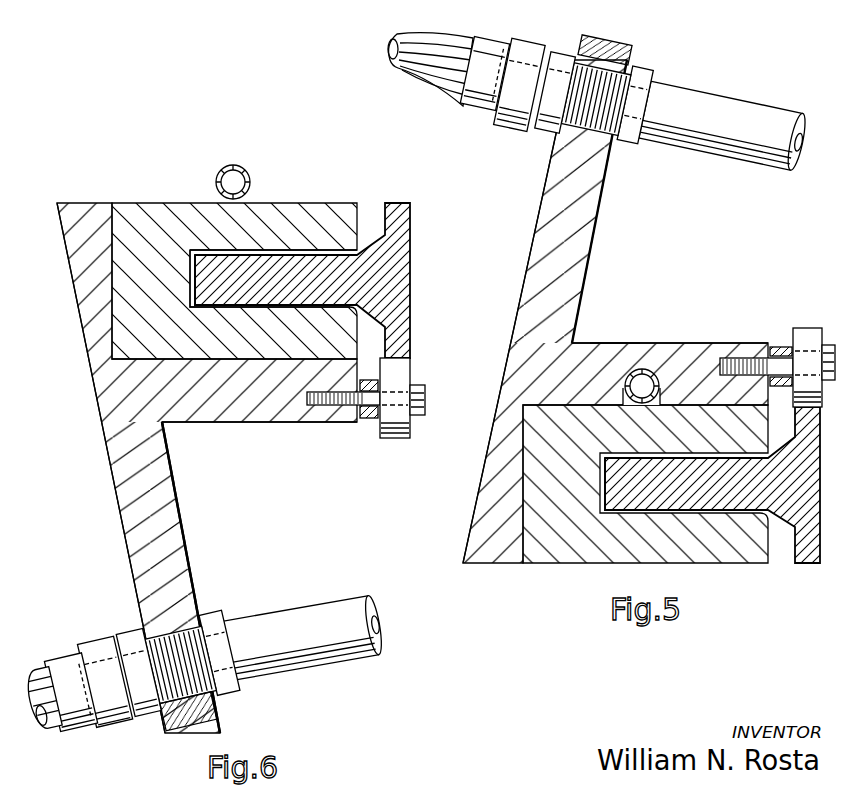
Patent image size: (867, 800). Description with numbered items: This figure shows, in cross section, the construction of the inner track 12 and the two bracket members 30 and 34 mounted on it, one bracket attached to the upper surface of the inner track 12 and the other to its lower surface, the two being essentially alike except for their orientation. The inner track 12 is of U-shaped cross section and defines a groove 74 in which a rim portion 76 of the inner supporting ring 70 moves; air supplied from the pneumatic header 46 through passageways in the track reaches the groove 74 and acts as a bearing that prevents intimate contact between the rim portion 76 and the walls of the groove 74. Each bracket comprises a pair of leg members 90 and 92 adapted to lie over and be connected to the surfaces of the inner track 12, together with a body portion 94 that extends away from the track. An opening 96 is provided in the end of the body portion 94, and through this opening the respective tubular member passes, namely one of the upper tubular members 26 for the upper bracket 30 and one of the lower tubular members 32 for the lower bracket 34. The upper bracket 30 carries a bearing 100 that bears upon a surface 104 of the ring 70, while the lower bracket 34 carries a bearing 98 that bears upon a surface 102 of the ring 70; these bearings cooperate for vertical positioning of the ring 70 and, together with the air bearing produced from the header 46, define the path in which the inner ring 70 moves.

In FIG. 6, the inner track 12 is at (335, 180).
In FIG. 5, the inner track 12 is at (710, 563).
In FIG. 5, the tubular member 26 is at (730, 98).
In FIG. 5, the bracket 30 is at (613, 342).
In FIG. 6, the tubular member 32 is at (276, 610).
In FIG. 6, the bracket 34 is at (190, 538).
In FIG. 6, the pneumatic header 46 is at (253, 182).
In FIG. 5, the pneumatic header 46 is at (647, 370).
In FIG. 6, the inner supporting ring 70 is at (412, 183).
In FIG. 5, the inner supporting ring 70 is at (805, 563).
In FIG. 6, the groove 74 is at (196, 270).
In FIG. 6, the rim portion 76 is at (197, 272).
In FIG. 6, the leg member 90 is at (77, 273).
In FIG. 5, the leg member 90 is at (487, 502).
In FIG. 6, the leg member 92 is at (230, 417).
In FIG. 5, the leg member 92 is at (697, 352).
In FIG. 6, the body portion 94 is at (130, 543).
In FIG. 5, the body portion 94 is at (547, 240).
In FIG. 6, the opening 96 is at (160, 717).
In FIG. 6, the bearing 98 is at (392, 440).
In FIG. 5, the bearing 100 is at (827, 310).
In FIG. 6, the surface 102 is at (395, 357).
In FIG. 5, the surface 104 is at (753, 475).